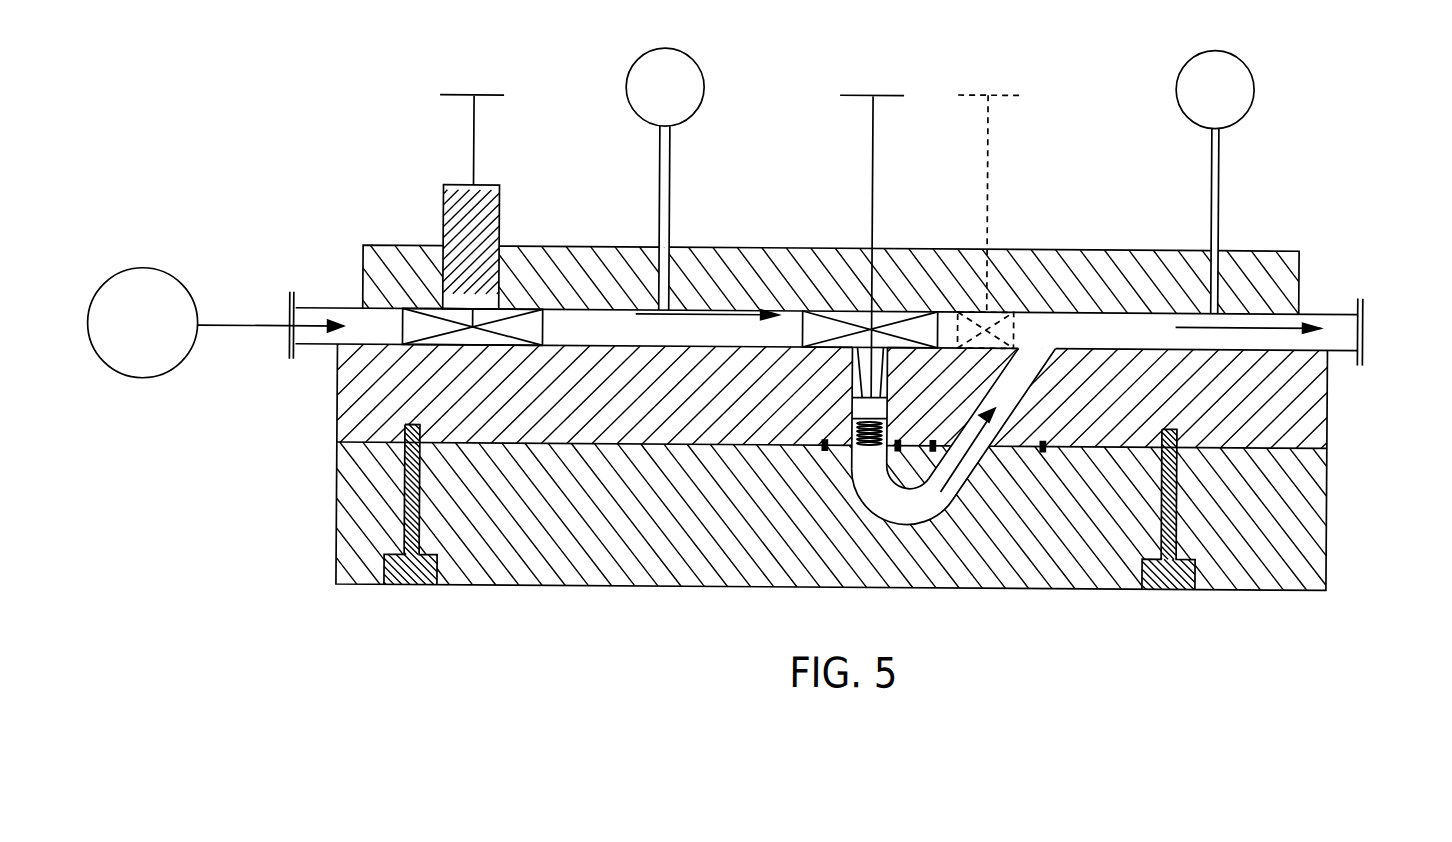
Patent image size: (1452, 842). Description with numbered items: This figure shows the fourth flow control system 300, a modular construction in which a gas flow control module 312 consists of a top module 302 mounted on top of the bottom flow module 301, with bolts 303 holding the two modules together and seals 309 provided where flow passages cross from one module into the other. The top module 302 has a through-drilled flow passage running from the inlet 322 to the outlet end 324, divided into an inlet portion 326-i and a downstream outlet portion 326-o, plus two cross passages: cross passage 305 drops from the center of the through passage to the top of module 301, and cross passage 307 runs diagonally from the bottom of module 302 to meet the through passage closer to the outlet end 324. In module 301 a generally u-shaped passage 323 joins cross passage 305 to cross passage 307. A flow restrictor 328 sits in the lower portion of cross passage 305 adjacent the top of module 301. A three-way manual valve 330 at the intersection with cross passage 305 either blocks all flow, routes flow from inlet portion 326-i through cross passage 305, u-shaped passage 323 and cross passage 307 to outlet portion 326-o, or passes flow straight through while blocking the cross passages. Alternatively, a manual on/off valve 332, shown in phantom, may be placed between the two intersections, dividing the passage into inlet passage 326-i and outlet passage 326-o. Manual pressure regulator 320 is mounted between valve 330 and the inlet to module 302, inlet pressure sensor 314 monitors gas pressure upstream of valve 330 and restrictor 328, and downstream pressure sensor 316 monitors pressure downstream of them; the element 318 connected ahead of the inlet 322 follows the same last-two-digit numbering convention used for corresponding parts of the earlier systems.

The system 300 is at (280, 500).
The bottom flow module 301 is at (1328, 493).
The top module 302 is at (1298, 255).
The bolts 303 is at (413, 590).
The cross passage 305 is at (865, 407).
The cross passage 307 is at (1053, 355).
The seals 309 is at (825, 446).
The gas flow control module 312 is at (718, 247).
The inlet pressure sensor 314 is at (703, 88).
The downstream pressure sensor 316 is at (1252, 87).
The fluid source 318 is at (190, 299).
The manual pressure regulator 320 is at (442, 191).
The inlet 322 is at (288, 363).
The u-shaped passage 323 is at (931, 481).
The outlet end 324 is at (1364, 343).
The inlet flow passage 326-i is at (549, 313).
The outlet passage 326-o is at (1170, 311).
The flow restrictor 328 is at (863, 447).
The three-way manual valve 330 is at (873, 159).
The manual on/off valve 332 is at (992, 91).